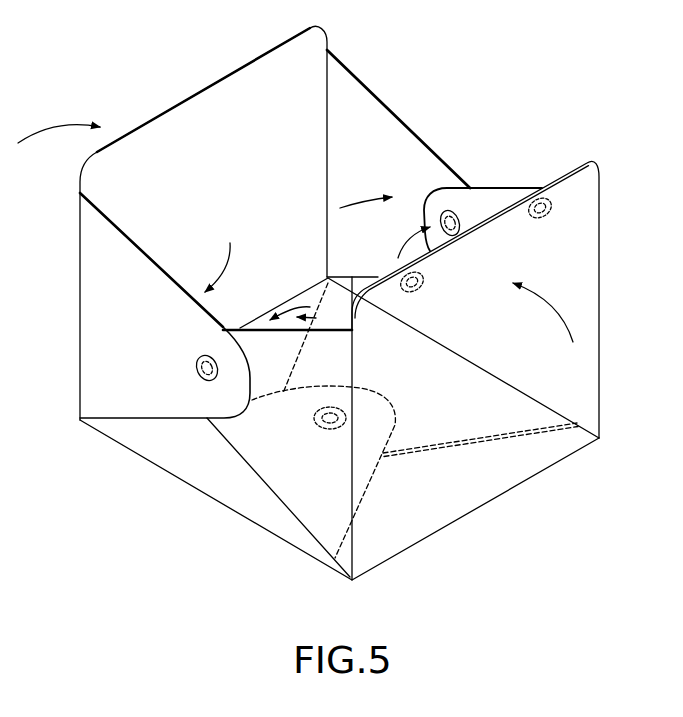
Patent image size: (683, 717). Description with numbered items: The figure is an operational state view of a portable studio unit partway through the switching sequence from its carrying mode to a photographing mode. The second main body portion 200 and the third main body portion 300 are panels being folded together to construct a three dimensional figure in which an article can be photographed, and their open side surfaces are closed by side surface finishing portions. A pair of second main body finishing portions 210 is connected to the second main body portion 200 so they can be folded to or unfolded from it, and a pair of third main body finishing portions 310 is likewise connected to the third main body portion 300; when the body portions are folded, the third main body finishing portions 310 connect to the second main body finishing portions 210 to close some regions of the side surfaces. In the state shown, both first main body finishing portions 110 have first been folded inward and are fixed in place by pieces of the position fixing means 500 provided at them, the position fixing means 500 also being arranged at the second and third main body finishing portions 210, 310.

The first main body finishing portion 110 is at (340, 317).
The second main body portion 200 is at (203, 103).
The second main body finishing portion 210 is at (390, 133).
The third main body portion 300 is at (590, 297).
The third main body finishing portion 310 is at (495, 200).
The position fixing means 500 is at (452, 212).